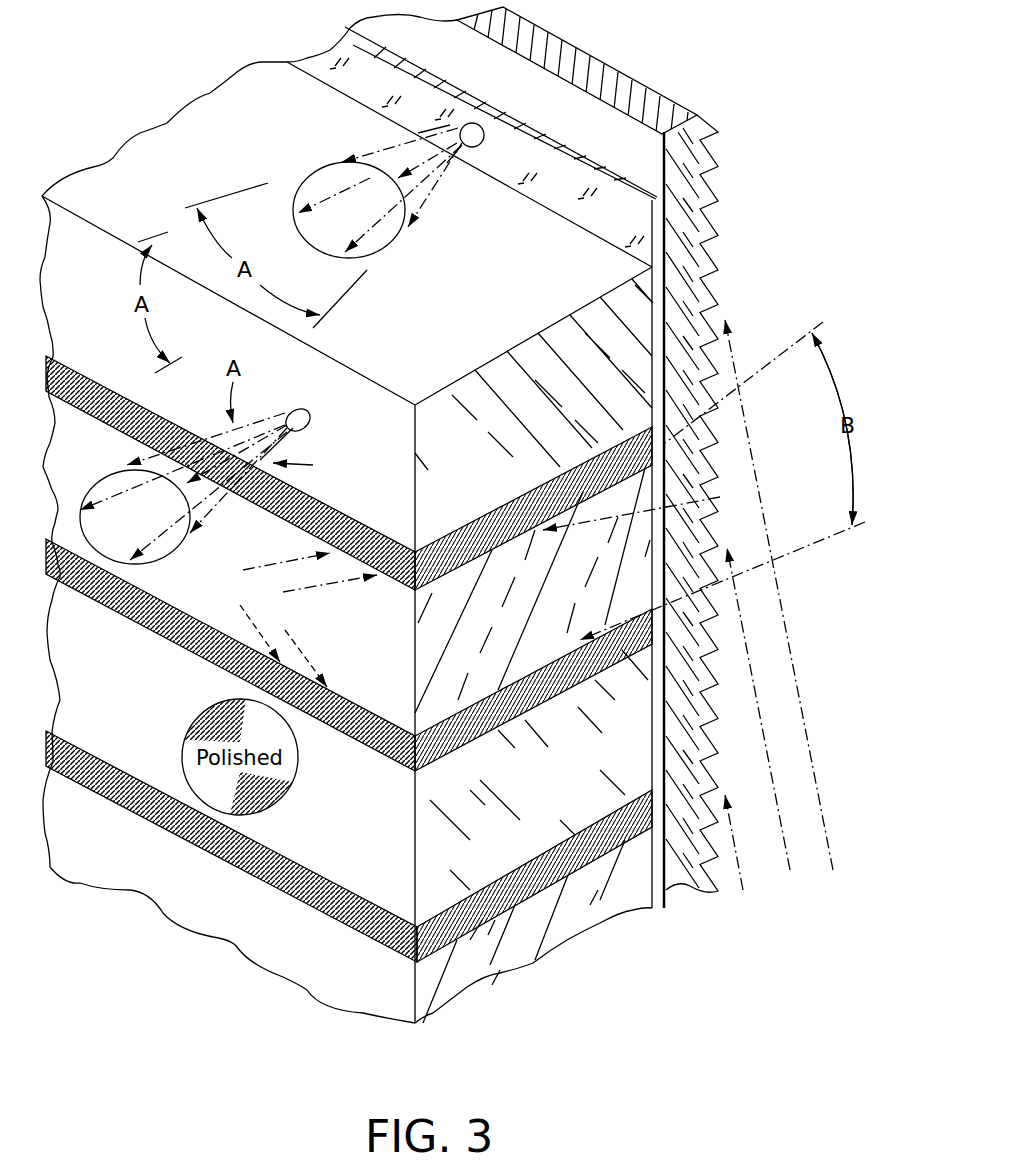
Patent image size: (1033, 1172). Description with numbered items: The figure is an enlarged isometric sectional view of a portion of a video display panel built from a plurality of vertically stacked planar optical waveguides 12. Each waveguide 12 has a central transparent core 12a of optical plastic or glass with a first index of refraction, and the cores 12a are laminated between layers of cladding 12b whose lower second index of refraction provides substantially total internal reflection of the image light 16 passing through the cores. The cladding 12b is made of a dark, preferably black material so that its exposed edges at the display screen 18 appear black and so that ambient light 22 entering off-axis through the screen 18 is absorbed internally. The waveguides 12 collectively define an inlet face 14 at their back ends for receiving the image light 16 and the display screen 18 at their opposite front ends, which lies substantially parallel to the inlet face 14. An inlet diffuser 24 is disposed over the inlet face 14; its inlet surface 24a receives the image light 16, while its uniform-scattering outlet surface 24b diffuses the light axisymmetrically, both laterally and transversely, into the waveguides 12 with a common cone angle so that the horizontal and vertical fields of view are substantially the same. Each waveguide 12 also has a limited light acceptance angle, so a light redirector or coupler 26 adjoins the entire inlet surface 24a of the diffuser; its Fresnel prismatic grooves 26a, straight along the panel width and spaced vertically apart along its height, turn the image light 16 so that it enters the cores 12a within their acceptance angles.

The planar optical waveguide 12 is at (92, 167).
The central transparent core 12a is at (539, 770).
The cladding 12b is at (482, 920).
The inlet face 14 is at (670, 885).
The image light 16 is at (805, 718).
The display screen 18 is at (123, 862).
The ambient light 22 is at (341, 584).
The inlet diffuser 24 is at (652, 202).
The inlet surface 24a is at (633, 221).
The outlet surface 24b is at (333, 60).
The coupler 26 is at (700, 113).
The Fresnel prismatic grooves 26a is at (700, 209).